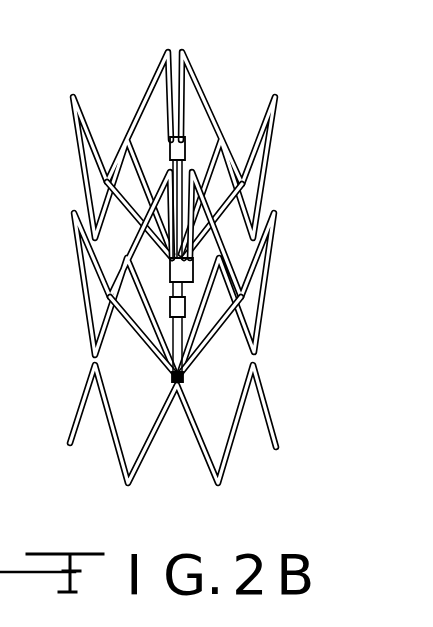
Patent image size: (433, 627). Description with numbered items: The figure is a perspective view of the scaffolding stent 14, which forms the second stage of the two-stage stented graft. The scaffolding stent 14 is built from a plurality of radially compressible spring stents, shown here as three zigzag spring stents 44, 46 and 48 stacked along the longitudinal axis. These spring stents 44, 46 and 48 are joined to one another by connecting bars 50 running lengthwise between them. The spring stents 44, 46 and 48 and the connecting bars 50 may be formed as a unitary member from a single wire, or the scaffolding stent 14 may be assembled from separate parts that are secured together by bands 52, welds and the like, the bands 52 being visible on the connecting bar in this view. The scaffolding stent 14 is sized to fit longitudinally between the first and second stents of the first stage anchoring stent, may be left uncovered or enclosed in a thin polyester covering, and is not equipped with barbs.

The scaffolding stent 14 is at (228, 245).
The spring stent 44 is at (267, 197).
The spring stent 46 is at (275, 267).
The spring stent 48 is at (270, 402).
The connecting bar 50 is at (192, 290).
The band 52 is at (185, 144).